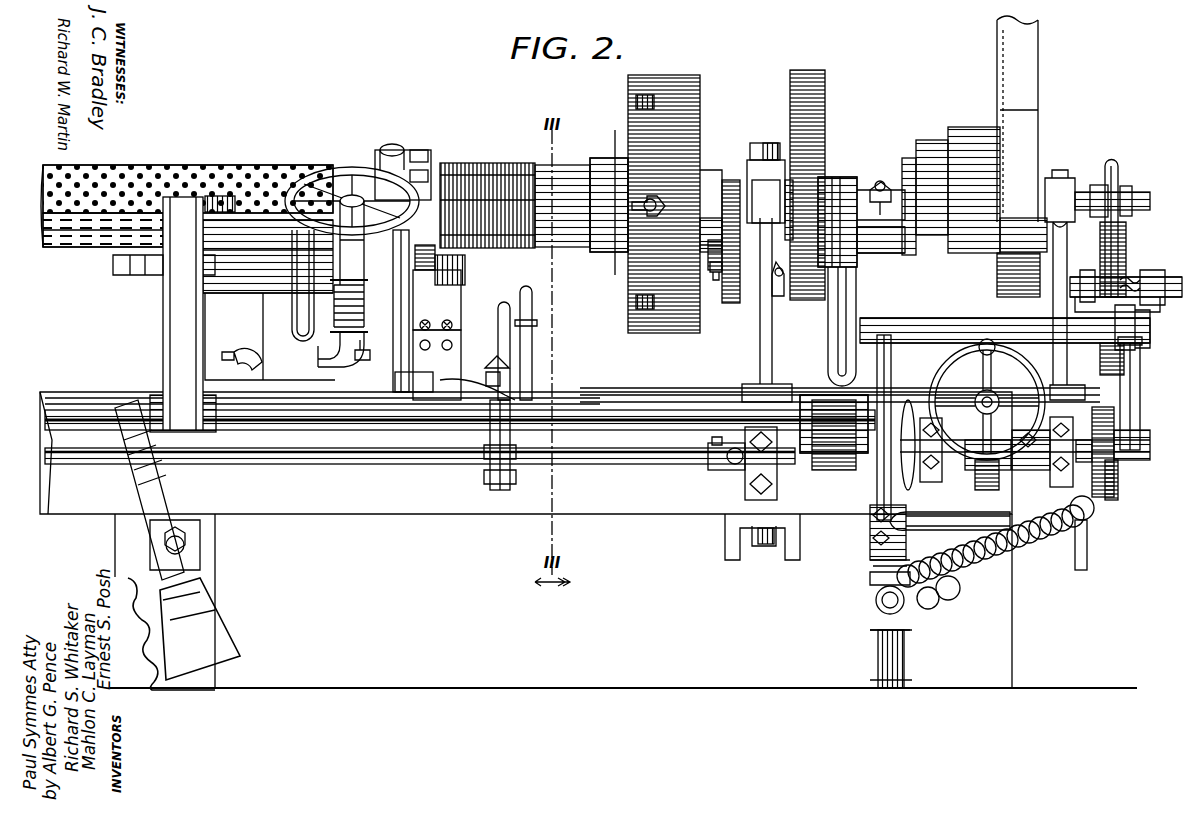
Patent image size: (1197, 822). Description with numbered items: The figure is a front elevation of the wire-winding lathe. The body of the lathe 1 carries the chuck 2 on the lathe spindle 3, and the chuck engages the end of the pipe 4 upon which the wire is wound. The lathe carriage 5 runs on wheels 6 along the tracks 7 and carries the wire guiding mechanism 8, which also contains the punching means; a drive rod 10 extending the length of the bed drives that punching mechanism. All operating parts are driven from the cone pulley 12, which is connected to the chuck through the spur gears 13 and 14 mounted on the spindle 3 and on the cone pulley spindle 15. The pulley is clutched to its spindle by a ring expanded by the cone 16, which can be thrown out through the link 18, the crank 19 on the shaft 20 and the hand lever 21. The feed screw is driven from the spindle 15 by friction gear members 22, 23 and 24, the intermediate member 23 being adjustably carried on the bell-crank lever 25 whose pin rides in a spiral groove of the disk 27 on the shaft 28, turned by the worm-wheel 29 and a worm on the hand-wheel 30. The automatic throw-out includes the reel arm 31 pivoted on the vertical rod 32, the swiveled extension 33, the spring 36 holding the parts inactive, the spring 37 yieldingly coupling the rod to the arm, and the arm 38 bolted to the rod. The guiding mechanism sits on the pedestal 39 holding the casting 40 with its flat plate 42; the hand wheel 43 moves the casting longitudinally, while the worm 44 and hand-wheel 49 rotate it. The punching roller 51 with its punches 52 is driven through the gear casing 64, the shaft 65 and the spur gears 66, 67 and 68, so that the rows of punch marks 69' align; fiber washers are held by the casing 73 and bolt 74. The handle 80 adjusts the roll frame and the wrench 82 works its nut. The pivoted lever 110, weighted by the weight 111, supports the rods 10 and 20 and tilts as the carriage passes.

The body of the lathe 1 is at (335, 515).
The chuck 2 is at (680, 77).
The lathe spindle 3 is at (752, 160).
The pipe 4 is at (163, 168).
The lathe carriage 5 is at (288, 412).
The wheels 6 is at (240, 350).
The tracks 7 is at (632, 402).
The wire guiding mechanism 8 is at (395, 148).
The drive rod 10 is at (415, 432).
The cone pulley 12 is at (958, 140).
The spur gear 13 is at (822, 92).
The spur gear 14 is at (818, 180).
The cone pulley spindle 15 is at (1132, 203).
The cone 16 is at (877, 182).
The link 18 is at (770, 368).
The crank 19 is at (780, 452).
The shaft 20 is at (352, 466).
The hand lever 21 is at (725, 462).
The friction gear member 22 is at (1116, 167).
The intermediate friction gear member 23 is at (1126, 262).
The friction gear member 24 is at (1135, 358).
The bell-crank lever 25 is at (1140, 384).
The disk 27 is at (1120, 466).
The shaft 28 is at (1040, 458).
The worm-wheel 29 is at (989, 478).
The hand-wheel 30 is at (1036, 382).
The arm 31 is at (875, 602).
The vertical rod 32 is at (878, 656).
The rod extension 33 is at (890, 387).
The spring 36 is at (955, 598).
The spring 37 is at (990, 572).
The arm 38 is at (950, 530).
The pedestal 39 is at (357, 355).
The casting 40 is at (395, 308).
The flat plate 42 is at (400, 322).
The hand wheel 43 is at (294, 306).
The worm 44 is at (340, 332).
The hand-wheel 49 is at (337, 172).
The punching roller 51 is at (461, 286).
The punches 52 is at (445, 300).
The gear casing 64 is at (846, 455).
The shaft 65 is at (893, 253).
The spur gear 66 is at (722, 268).
The spur gear 67 is at (732, 300).
The spur gear 68 is at (730, 182).
The rows of punch marks 69' is at (487, 185).
The casing 73 is at (170, 347).
The bolt 74 is at (216, 198).
The handle 80 is at (505, 380).
The wrench 82 is at (511, 330).
The pivoted lever 110 is at (178, 568).
The weight 111 is at (210, 632).